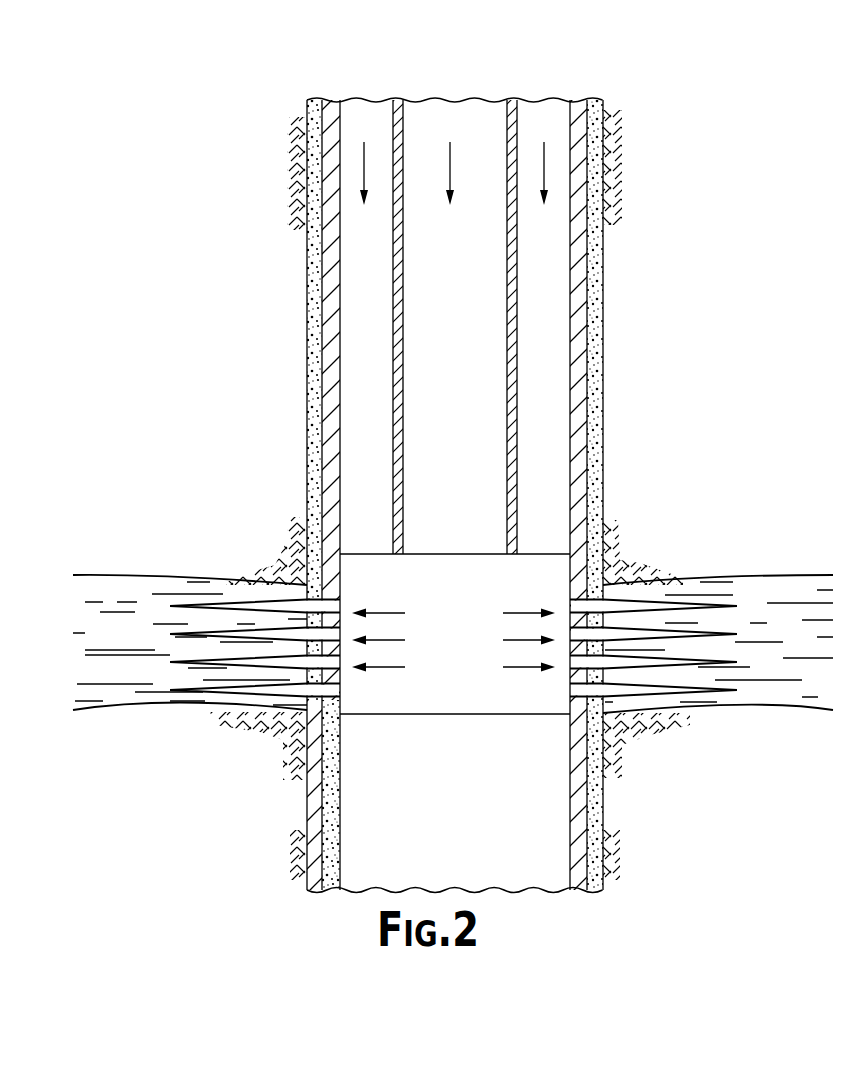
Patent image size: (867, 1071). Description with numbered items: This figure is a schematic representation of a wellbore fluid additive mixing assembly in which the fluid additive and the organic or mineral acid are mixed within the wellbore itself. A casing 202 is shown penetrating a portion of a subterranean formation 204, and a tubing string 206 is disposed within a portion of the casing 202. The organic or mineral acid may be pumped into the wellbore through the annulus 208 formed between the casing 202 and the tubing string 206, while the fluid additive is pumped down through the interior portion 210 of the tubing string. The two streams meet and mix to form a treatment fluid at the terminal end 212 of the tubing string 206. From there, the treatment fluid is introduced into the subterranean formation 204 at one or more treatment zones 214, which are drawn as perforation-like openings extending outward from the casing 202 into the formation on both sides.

The casing 202 is at (577, 102).
The subterranean formation 204 is at (615, 180).
The tubing string 206 is at (398, 103).
The annulus 208 is at (360, 110).
The interior portion of the tubing string 210 is at (423, 103).
The terminal end of tubing string 212 is at (490, 553).
The treatment zones 214 is at (660, 695).